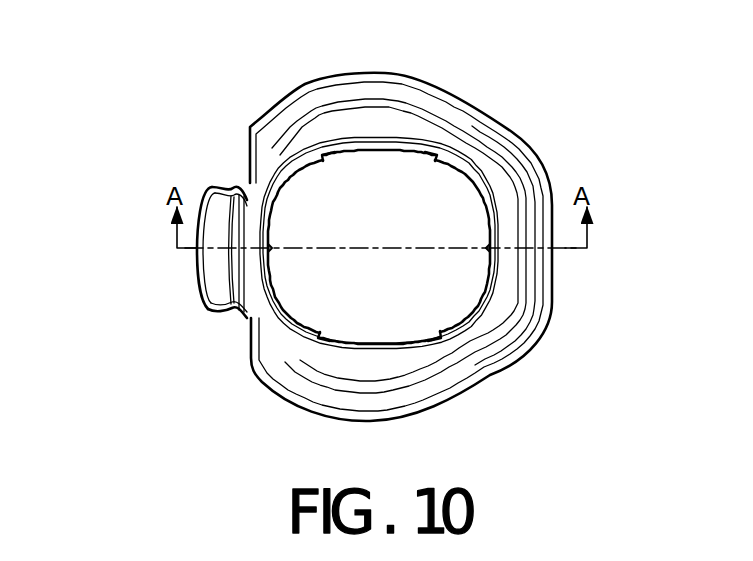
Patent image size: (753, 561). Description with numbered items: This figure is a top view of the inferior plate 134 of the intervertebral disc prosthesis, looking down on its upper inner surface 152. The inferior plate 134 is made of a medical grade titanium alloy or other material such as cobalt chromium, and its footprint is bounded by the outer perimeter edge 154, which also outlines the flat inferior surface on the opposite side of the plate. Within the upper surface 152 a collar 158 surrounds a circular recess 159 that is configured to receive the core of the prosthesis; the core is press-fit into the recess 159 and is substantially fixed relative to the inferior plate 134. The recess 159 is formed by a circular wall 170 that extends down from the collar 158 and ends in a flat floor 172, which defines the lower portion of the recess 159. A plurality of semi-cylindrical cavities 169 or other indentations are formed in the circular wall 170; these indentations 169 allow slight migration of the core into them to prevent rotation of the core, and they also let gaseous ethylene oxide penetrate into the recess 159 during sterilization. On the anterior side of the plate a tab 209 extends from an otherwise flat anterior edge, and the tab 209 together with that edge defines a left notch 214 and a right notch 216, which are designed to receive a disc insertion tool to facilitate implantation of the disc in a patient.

The inferior plate 134 is at (222, 116).
The upper inner surface 152 is at (515, 157).
The outer perimeter edge 154 is at (291, 396).
The collar 158 is at (510, 267).
The recess 159 is at (330, 281).
The semi-cylindrical cavities 169 is at (322, 160).
The circular wall 170 is at (454, 300).
The flat floor 172 is at (407, 296).
The tab 209 is at (217, 283).
The left notch 214 is at (238, 320).
The right notch 216 is at (240, 182).